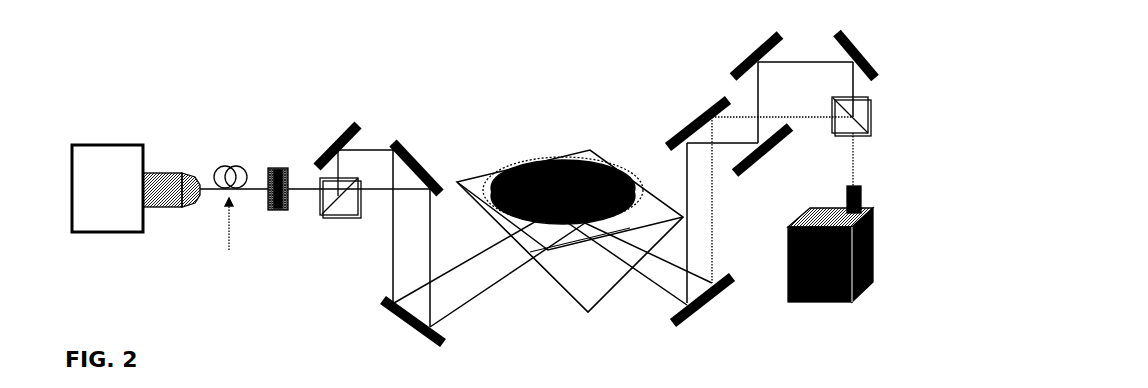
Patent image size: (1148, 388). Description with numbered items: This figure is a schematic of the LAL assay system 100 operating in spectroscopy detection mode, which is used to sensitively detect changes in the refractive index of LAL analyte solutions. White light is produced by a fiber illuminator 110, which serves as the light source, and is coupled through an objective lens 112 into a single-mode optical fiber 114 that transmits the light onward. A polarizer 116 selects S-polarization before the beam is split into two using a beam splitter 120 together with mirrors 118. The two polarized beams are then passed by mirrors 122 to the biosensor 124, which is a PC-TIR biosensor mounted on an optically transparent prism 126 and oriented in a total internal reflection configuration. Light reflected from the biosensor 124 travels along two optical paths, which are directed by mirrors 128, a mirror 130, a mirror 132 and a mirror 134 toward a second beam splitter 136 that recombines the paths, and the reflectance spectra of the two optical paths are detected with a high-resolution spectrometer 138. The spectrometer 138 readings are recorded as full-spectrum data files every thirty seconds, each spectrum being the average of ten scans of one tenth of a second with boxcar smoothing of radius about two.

The LAL assay system 100 is at (157, 43).
The fiber illuminator 110 is at (111, 156).
The objective lens 112 is at (172, 209).
The single-mode optical fiber 114 is at (236, 164).
The polarizer 116 is at (283, 212).
The mirrors 118 is at (337, 134).
The beam splitter 120 is at (325, 214).
The mirrors 122 is at (404, 146).
The biosensor 124 is at (497, 172).
The optically transparent prism 126 is at (612, 267).
The mirrors 128 is at (683, 133).
The mirror 130 is at (741, 62).
The mirror 132 is at (773, 150).
The mirror 134 is at (874, 67).
The beam splitter 136 is at (869, 133).
The spectrometer 138 is at (873, 244).